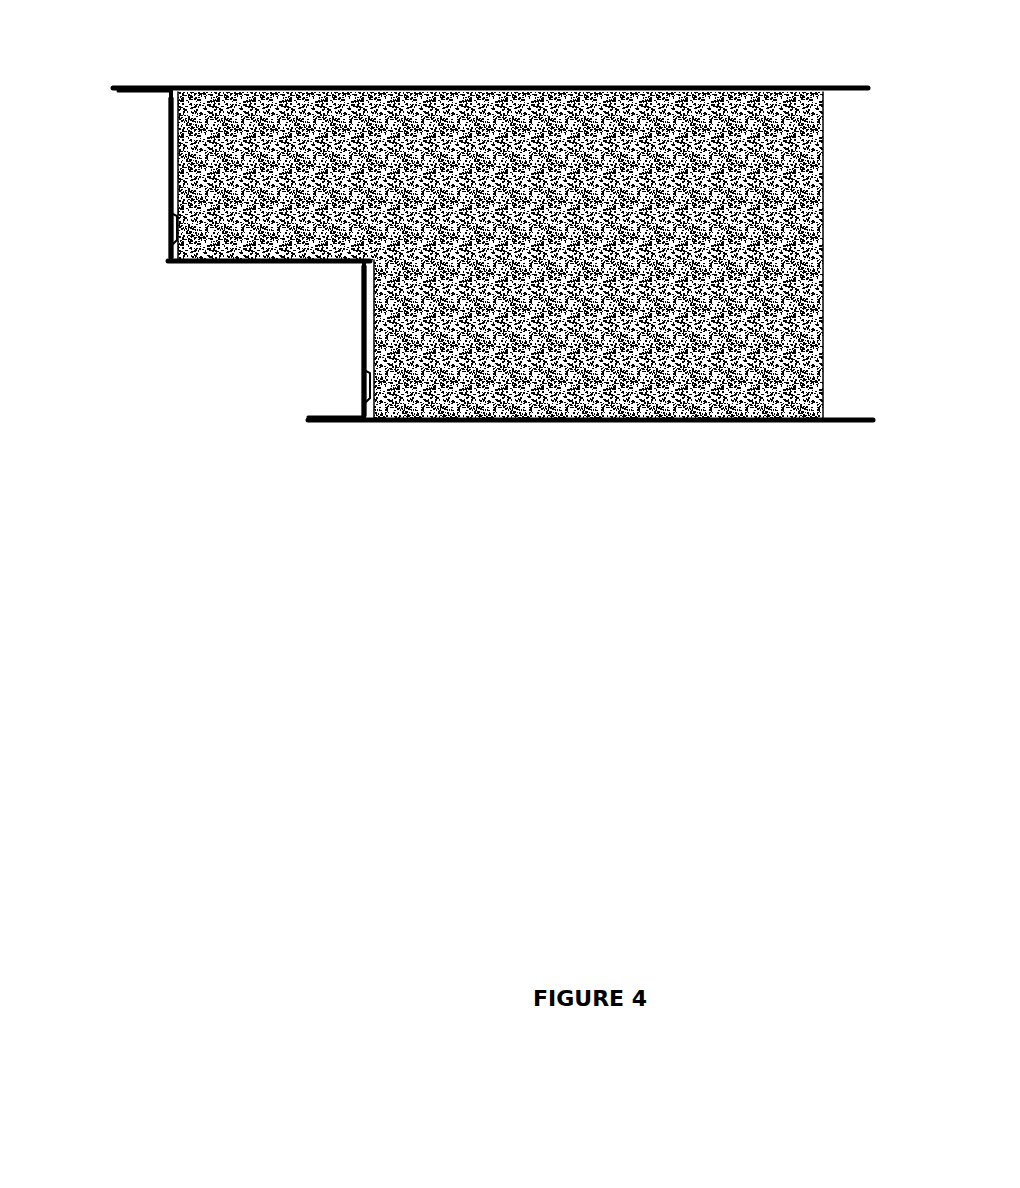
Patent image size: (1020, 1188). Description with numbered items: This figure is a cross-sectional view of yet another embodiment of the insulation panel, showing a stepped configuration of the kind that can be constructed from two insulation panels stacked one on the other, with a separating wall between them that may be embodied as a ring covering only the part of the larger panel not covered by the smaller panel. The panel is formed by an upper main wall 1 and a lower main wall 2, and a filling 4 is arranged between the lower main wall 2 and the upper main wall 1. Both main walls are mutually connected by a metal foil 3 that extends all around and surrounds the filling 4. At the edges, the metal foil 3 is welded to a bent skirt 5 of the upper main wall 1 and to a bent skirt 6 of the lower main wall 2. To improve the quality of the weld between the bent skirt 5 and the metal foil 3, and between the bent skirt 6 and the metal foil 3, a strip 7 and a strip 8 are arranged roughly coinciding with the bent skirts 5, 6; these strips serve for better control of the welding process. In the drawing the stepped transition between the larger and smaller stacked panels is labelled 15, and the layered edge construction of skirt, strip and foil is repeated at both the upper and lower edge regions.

The upper main wall 1 is at (540, 80).
The lower main wall 2 is at (572, 414).
The metal foil 3 is at (158, 180).
The filling 4 is at (650, 258).
The bent skirt 5 is at (158, 96).
The bent skirt 6 is at (160, 256).
The strip 7 is at (158, 132).
The strip 8 is at (158, 218).
The step 15 is at (240, 258).